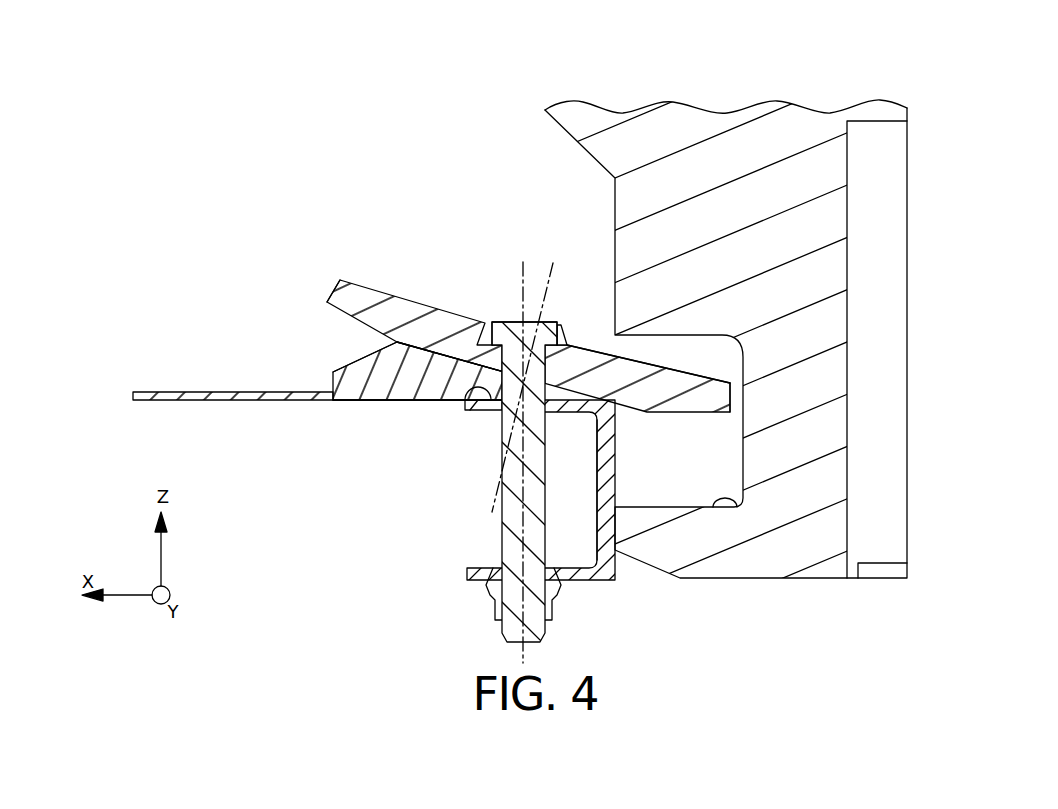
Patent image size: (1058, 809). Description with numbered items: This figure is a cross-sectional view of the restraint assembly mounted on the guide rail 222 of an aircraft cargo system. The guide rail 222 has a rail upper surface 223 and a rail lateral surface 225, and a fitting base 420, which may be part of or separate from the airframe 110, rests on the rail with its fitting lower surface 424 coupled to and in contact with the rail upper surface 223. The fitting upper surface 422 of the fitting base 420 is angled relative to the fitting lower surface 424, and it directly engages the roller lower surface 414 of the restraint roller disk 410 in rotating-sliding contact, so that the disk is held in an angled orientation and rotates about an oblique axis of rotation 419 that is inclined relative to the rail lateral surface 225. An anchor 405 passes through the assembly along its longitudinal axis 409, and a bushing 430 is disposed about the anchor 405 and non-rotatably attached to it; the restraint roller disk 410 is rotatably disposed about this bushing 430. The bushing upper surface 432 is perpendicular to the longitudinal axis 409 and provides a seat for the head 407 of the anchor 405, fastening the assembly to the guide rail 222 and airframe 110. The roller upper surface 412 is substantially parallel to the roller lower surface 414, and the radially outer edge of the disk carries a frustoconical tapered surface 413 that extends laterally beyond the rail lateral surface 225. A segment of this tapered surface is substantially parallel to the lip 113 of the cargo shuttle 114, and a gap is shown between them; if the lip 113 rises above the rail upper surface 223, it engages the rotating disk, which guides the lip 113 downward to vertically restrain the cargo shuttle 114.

The airframe 110 is at (170, 397).
The lip 113 is at (735, 507).
The cargo shuttle 114 is at (787, 133).
The guide rail 222 is at (615, 553).
The rail upper surface 223 is at (463, 405).
The rail lateral surface 225 is at (618, 473).
The anchor 405 is at (537, 437).
The head 407 is at (556, 320).
The longitudinal axis 409 is at (522, 268).
The restraint roller disk 410 is at (676, 380).
The roller upper surface 412 is at (392, 297).
The frustoconical tapered surface 413 is at (330, 301).
The roller lower surface 414 is at (440, 353).
The axis of rotation 419 is at (557, 252).
The fitting base 420 is at (353, 400).
The fitting upper surface 422 is at (375, 400).
The fitting lower surface 424 is at (437, 401).
The bushing 430 is at (606, 351).
The bushing upper surface 432 is at (560, 343).